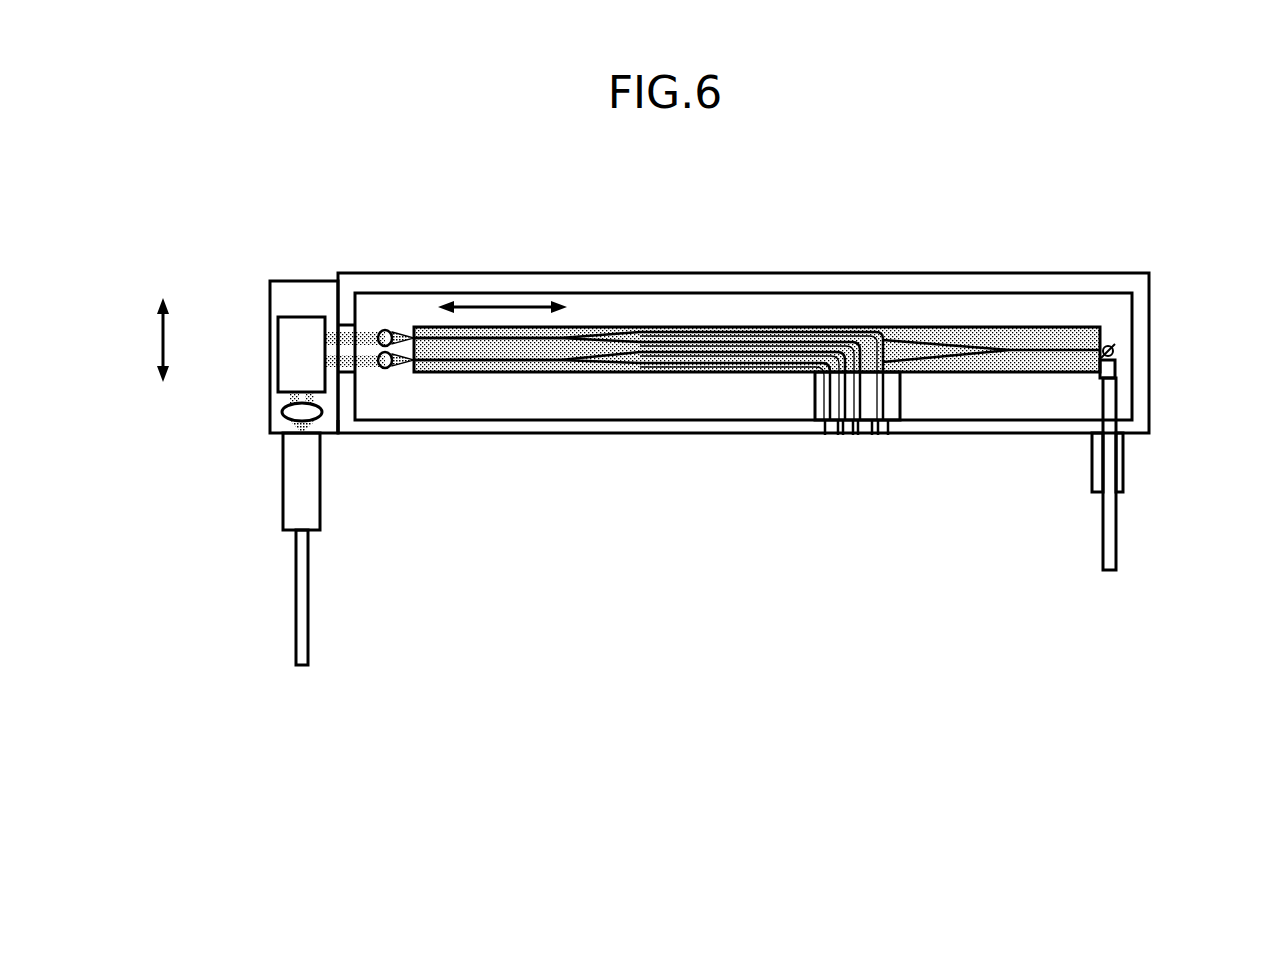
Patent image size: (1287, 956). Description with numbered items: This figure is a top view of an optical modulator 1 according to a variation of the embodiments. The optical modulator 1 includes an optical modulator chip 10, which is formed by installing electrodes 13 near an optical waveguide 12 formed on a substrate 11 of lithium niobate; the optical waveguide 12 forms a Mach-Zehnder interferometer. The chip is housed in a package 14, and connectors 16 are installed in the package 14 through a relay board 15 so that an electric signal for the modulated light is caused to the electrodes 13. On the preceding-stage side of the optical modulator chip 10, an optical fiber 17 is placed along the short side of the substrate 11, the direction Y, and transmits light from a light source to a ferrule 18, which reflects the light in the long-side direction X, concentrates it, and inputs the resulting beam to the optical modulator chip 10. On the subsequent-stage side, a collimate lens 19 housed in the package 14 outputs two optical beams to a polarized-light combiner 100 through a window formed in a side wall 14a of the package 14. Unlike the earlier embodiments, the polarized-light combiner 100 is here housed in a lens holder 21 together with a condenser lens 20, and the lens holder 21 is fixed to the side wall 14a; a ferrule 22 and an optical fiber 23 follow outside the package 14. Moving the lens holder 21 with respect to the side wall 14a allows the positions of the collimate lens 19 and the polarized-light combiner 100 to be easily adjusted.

The optical modulator 1 is at (884, 228).
The optical modulator chip 10 is at (958, 316).
The substrate 11 is at (1083, 337).
The optical waveguide 12 is at (1044, 340).
The electrodes 13 is at (758, 338).
The package 14 is at (803, 282).
The side wall 14a is at (345, 428).
The relay board 15 is at (905, 404).
The connectors 16 is at (830, 437).
The optical fiber 17 is at (1118, 542).
The ferrule 18 is at (1120, 367).
The collimate lens 19 is at (386, 353).
The condenser lens 20 is at (283, 412).
The lens holder 21 is at (277, 352).
The ferrule 22 is at (283, 478).
The optical fiber 23 is at (296, 612).
The polarized-light combiner 100 is at (296, 316).
The direction X is at (503, 300).
The direction Y is at (160, 342).